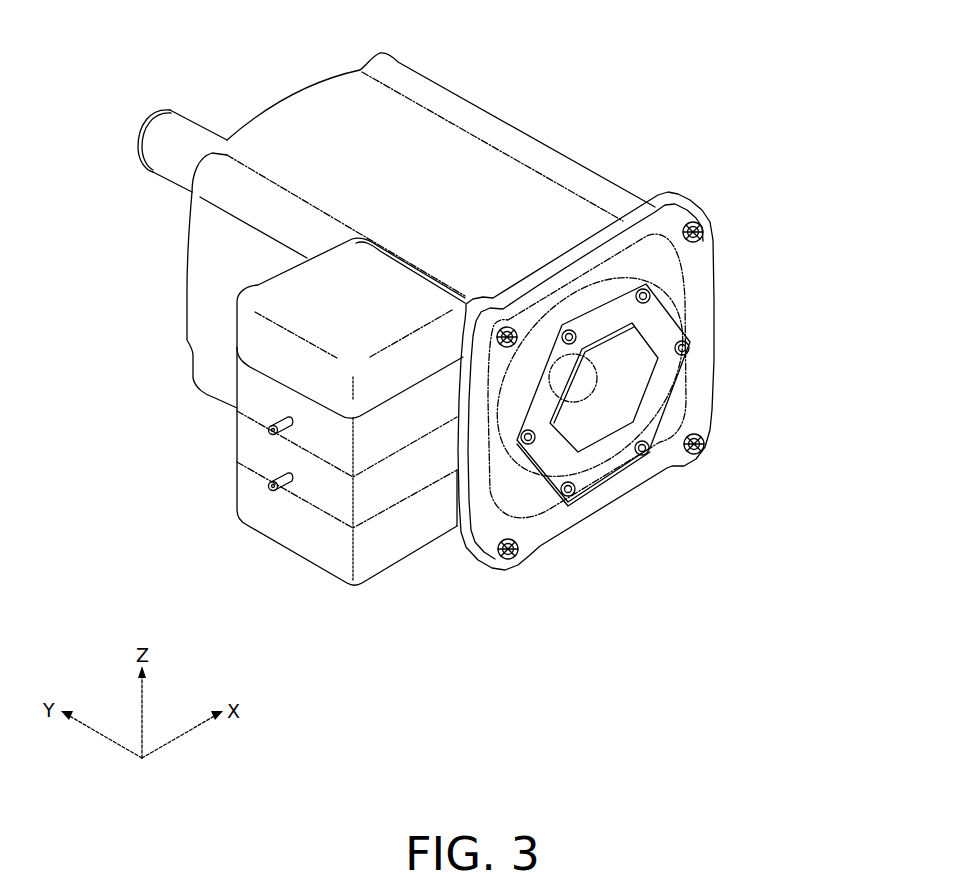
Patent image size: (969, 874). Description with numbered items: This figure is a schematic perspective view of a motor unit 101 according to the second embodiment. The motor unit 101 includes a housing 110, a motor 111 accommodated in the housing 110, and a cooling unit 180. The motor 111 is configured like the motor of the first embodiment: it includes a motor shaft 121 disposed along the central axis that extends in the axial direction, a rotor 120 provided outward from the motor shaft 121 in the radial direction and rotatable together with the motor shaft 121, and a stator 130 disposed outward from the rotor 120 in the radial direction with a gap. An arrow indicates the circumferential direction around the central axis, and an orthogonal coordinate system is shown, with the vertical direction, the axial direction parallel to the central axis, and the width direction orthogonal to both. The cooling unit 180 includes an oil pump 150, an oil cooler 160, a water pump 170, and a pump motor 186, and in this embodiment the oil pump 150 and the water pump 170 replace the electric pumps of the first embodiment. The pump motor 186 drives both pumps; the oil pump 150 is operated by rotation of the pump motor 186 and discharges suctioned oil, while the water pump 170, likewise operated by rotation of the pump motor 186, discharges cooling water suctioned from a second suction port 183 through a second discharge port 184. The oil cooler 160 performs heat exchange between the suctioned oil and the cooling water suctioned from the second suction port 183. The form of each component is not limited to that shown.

The motor unit 101 is at (571, 68).
The housing 110 is at (571, 166).
The motor 111 is at (634, 474).
The rotor 120 is at (518, 467).
The motor shaft 121 is at (199, 130).
The stator 130 is at (680, 296).
The oil pump 150 is at (403, 540).
The oil cooler 160 is at (333, 503).
The water pump 170 is at (322, 443).
The cooling unit 180 is at (222, 431).
The second suction port 183 is at (277, 420).
The second discharge port 184 is at (276, 480).
The pump motor 186 is at (290, 301).